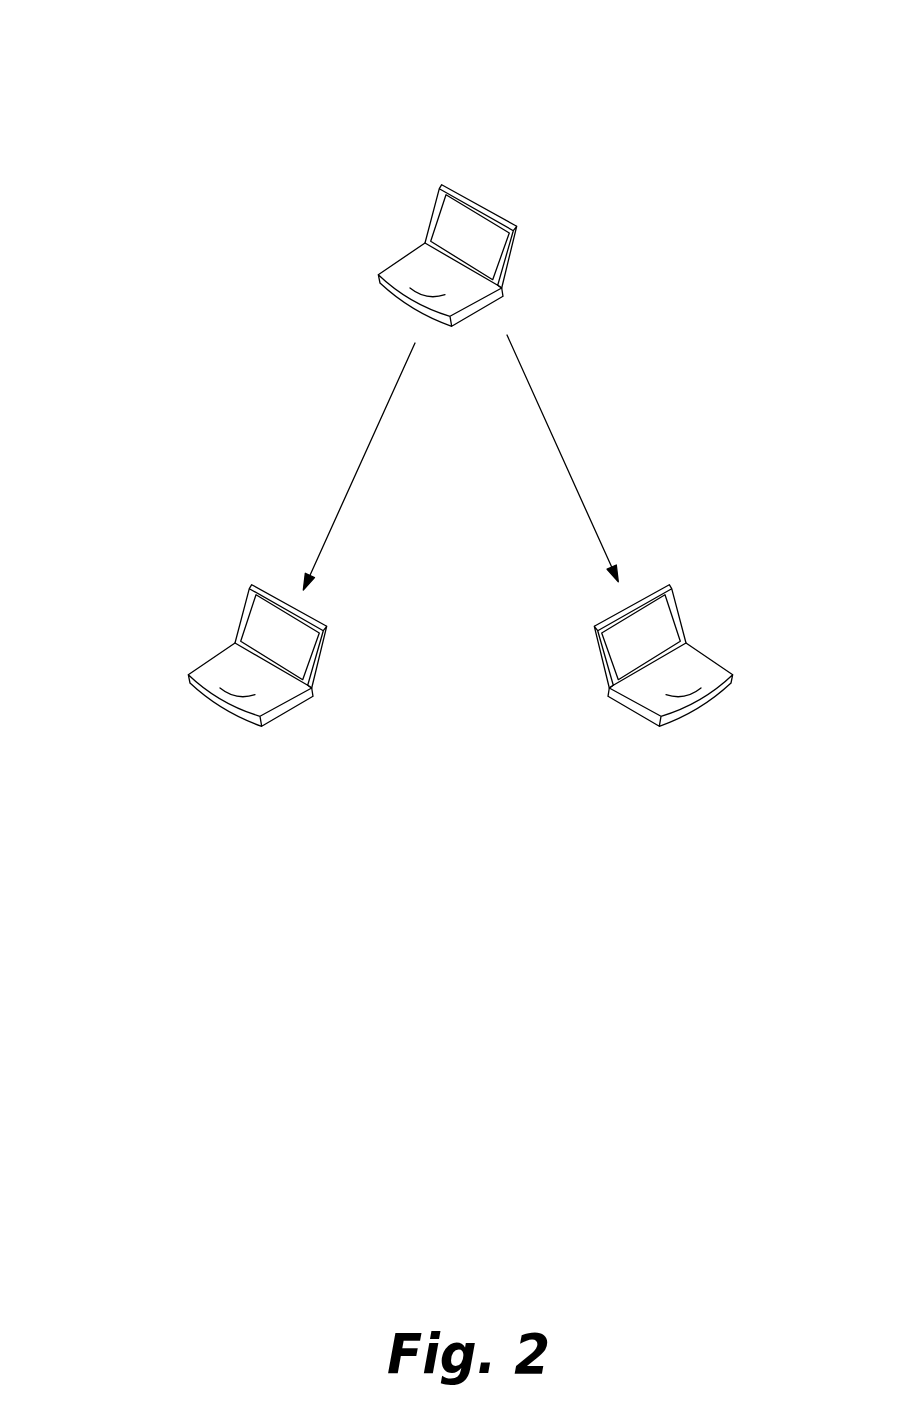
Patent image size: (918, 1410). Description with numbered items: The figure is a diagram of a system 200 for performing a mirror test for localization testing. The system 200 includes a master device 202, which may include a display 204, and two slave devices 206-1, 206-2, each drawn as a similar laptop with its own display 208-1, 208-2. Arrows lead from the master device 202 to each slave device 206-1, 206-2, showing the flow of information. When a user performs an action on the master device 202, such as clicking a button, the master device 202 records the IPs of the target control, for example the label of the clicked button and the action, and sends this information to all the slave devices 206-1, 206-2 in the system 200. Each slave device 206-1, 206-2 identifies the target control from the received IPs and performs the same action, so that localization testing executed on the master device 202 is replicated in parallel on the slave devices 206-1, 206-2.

The system 200 is at (148, 56).
The master device 202 is at (391, 272).
The display 204 is at (448, 228).
The slave device 206-1 is at (208, 684).
The display 208-1 is at (215, 634).
The slave device 206-2 is at (714, 684).
The display 208-2 is at (707, 634).